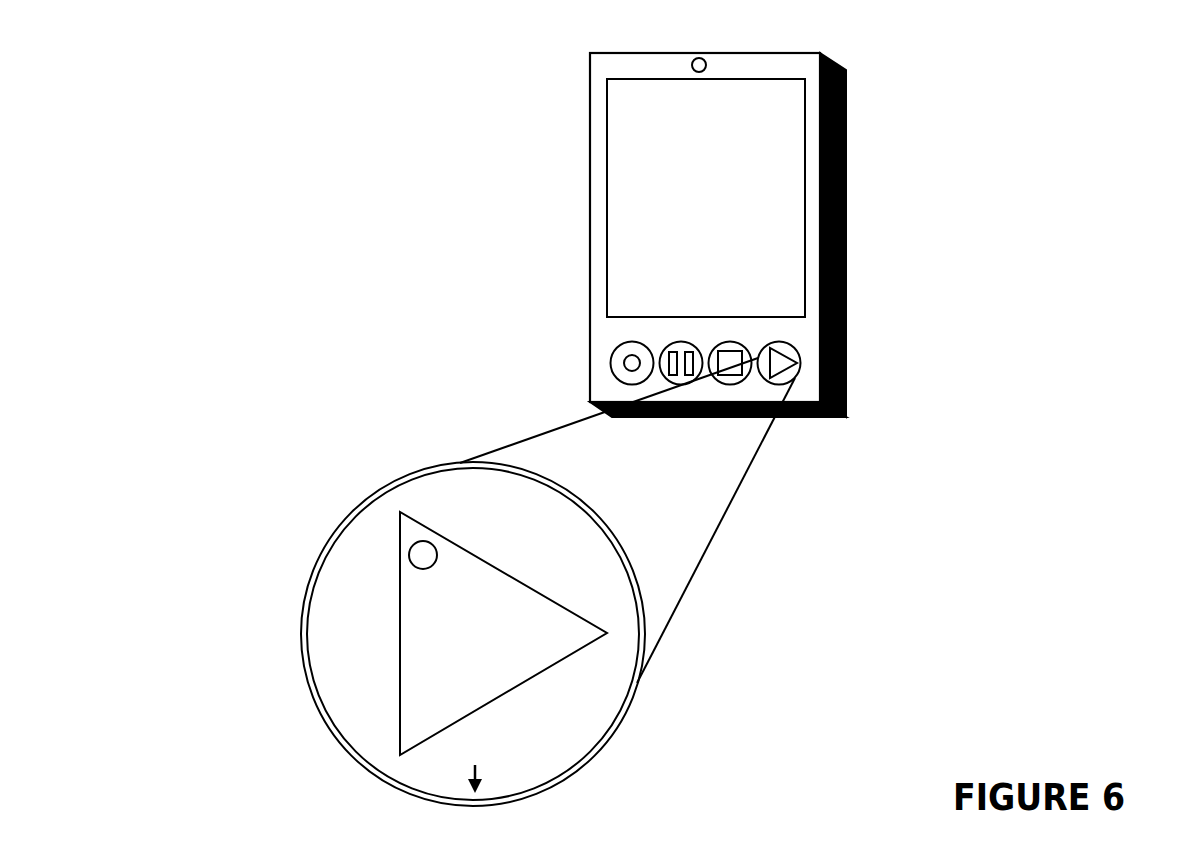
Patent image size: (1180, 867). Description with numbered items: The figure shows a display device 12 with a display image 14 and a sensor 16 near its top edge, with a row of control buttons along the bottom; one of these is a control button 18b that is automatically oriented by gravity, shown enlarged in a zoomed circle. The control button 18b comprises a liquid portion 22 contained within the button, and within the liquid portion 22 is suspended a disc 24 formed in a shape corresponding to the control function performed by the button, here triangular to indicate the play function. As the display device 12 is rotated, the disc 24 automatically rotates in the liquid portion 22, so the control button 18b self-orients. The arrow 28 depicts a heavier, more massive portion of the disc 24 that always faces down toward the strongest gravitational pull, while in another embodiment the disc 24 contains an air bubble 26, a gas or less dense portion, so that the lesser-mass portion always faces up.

The display device 12 is at (591, 137).
The display image 14 is at (630, 254).
The sensor 16 is at (692, 64).
The control button 18b is at (801, 443).
The liquid portion 22 is at (342, 599).
The disc 24 is at (418, 687).
The air bubble 26 is at (425, 548).
The arrow 28 is at (477, 773).